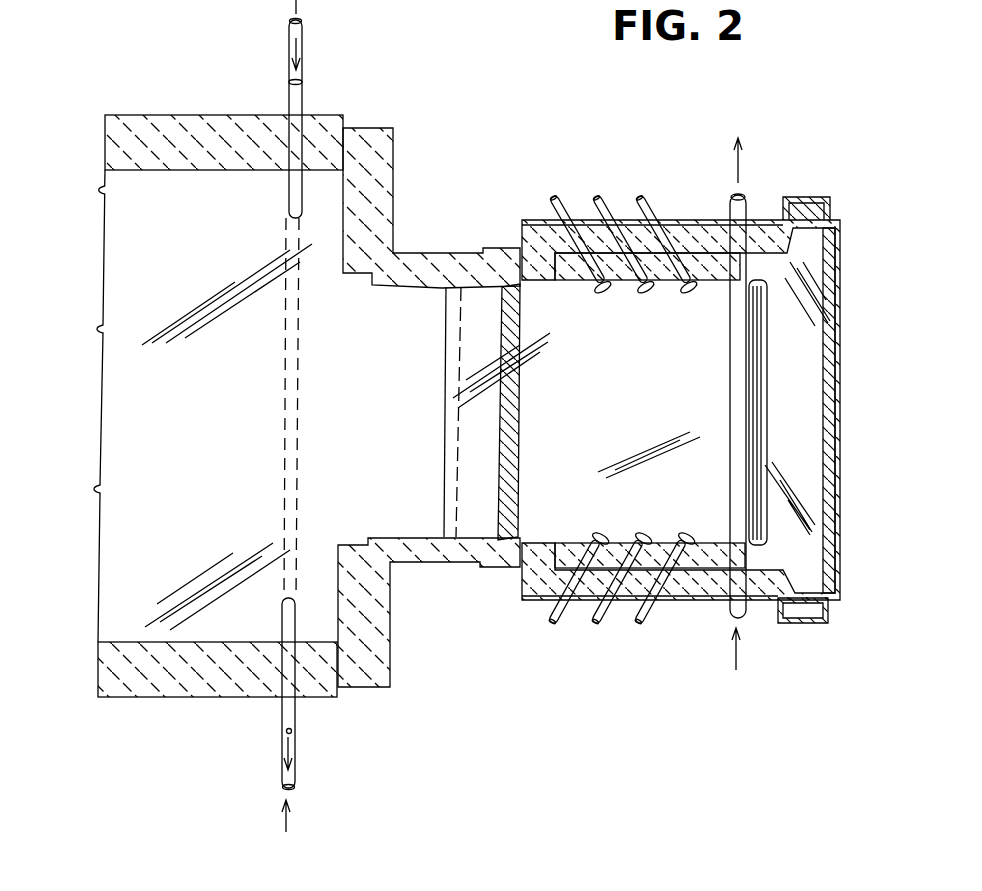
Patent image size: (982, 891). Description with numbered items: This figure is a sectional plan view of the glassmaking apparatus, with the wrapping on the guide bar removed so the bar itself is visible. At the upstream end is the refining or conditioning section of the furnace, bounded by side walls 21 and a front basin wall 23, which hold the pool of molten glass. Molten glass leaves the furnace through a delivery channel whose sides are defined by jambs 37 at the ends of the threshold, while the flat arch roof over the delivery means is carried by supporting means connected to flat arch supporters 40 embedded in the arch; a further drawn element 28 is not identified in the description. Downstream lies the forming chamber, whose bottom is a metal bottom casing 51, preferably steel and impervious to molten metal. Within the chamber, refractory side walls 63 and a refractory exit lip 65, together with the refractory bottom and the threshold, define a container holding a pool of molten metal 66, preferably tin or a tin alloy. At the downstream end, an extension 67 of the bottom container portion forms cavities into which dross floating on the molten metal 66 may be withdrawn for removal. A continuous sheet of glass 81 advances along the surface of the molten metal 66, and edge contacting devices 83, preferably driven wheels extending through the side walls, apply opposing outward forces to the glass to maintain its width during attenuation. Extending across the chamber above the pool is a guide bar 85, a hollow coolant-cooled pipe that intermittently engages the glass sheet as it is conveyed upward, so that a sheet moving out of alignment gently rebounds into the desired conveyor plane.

The side walls 21 is at (190, 698).
The front basin wall 23 is at (388, 646).
The coolant tube 28 is at (292, 731).
The jambs 37 is at (440, 563).
The flat arch supporters 40 is at (520, 432).
The bottom casing 51 is at (838, 515).
The refractory side walls 63 is at (678, 588).
The refractory exit lip 65 is at (828, 447).
The pool of molten metal 66 is at (800, 388).
The extension 67 is at (805, 623).
The continuous sheet of glass 81 is at (648, 395).
The edge contacting devices 83 is at (605, 618).
The guide bar 85 is at (732, 352).